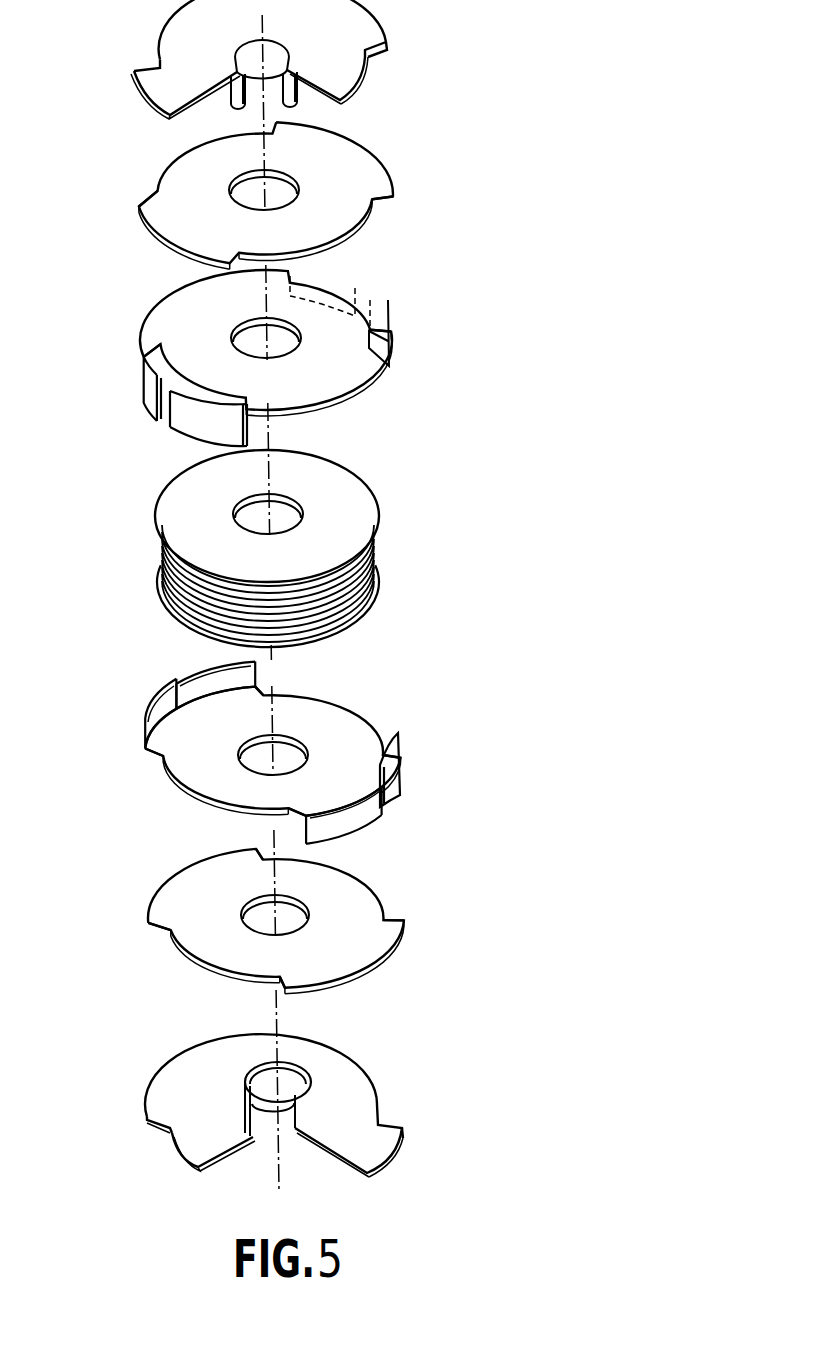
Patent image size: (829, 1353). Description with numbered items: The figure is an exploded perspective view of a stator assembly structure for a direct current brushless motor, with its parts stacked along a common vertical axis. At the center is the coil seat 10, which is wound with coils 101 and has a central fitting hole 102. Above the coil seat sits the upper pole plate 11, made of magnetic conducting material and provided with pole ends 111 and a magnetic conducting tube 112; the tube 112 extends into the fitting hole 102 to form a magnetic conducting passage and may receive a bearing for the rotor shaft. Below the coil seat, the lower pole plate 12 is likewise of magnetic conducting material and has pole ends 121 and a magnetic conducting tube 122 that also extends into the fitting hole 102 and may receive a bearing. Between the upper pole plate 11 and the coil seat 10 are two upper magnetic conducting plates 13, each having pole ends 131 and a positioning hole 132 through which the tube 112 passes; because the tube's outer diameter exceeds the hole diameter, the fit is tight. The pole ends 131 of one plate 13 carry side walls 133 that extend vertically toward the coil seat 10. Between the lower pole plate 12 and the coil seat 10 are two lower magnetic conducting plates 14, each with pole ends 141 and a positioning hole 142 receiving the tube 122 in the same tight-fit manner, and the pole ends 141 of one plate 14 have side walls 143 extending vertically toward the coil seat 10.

The coil seat 10 is at (279, 548).
The coils 101 is at (353, 583).
The fitting hole 102 is at (247, 512).
The upper pole plate 11 is at (273, 76).
The pole ends 111 is at (138, 88).
The magnetic conducting tube 112 is at (293, 104).
The lower pole plate 12 is at (287, 1099).
The pole ends 121 is at (157, 1093).
The magnetic conducting tube 122 is at (307, 1072).
The upper magnetic conducting plate 13 is at (265, 284).
The pole ends 131 is at (137, 227).
The positioning hole 132 is at (252, 194).
The side walls 133 is at (148, 398).
The lower magnetic conducting plate 14 is at (279, 832).
The pole ends 141 is at (158, 752).
The positioning hole 142 is at (285, 750).
The side walls 143 is at (141, 713).